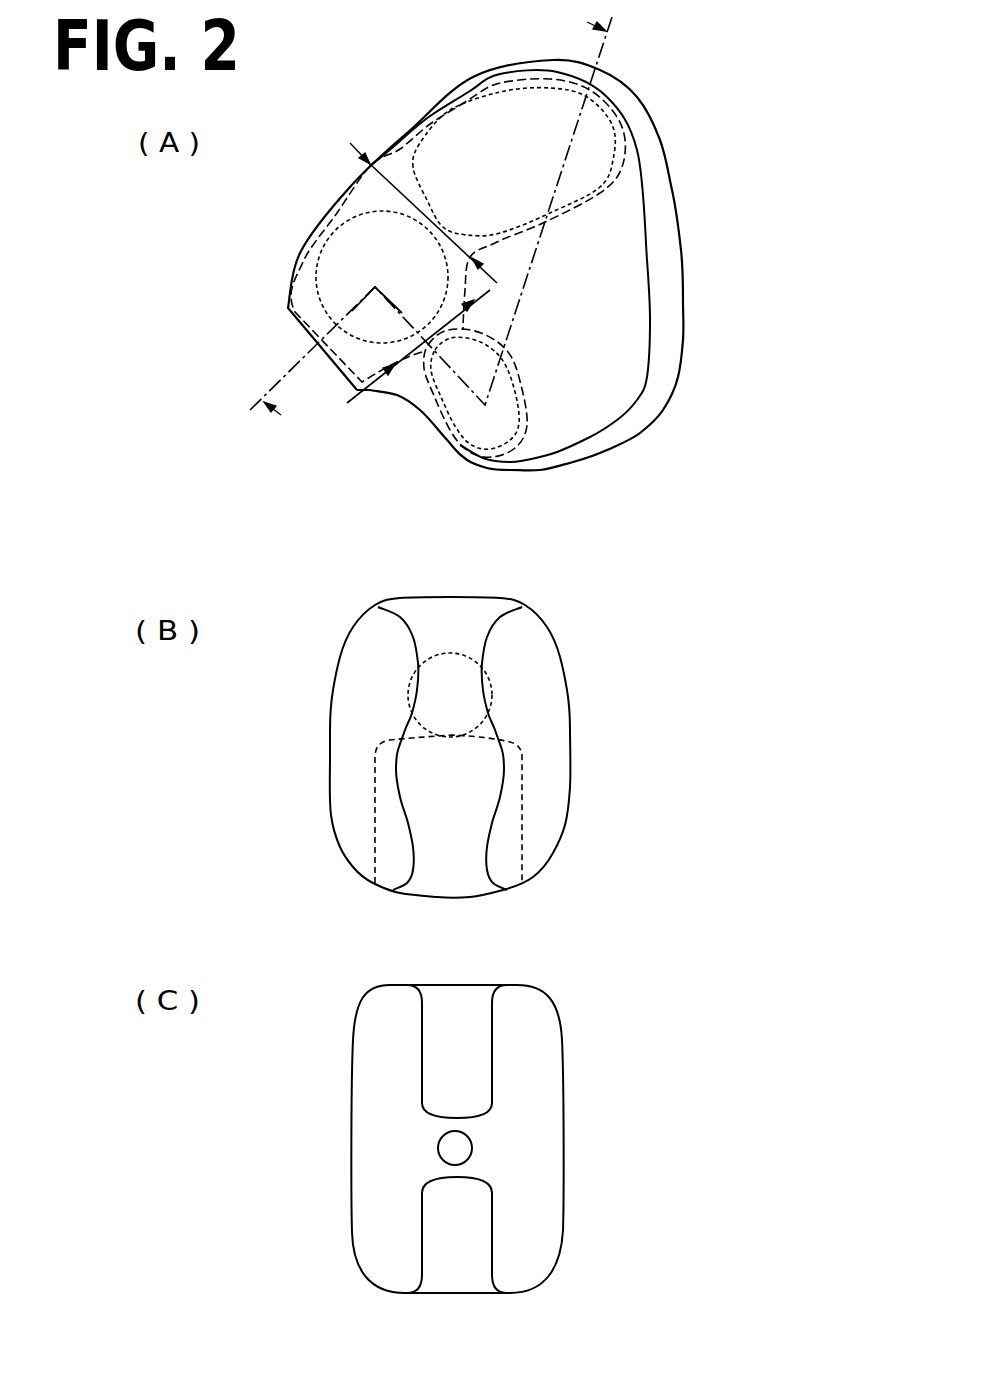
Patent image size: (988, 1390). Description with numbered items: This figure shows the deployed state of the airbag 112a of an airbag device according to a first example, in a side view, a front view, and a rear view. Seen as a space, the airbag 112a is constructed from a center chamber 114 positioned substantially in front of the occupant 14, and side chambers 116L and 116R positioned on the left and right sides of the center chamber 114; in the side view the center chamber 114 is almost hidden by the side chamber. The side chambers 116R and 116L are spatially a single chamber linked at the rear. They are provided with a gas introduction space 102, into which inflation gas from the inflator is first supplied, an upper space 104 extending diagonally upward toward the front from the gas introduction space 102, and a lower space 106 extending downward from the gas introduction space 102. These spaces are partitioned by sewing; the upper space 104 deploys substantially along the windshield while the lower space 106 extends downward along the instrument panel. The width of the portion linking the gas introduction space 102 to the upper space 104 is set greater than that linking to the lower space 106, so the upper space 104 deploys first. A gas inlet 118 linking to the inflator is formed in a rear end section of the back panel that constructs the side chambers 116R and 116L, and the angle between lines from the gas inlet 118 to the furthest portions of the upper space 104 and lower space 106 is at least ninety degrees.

The airbag 112a is at (693, 75).
The gas introduction space 102 is at (352, 212).
The upper space 104 is at (424, 146).
The lower space 106 is at (456, 439).
The center chamber 114 is at (665, 231).
The side chamber 116L is at (627, 203).
The side chamber 116R is at (557, 681).
The occupant 14 is at (523, 792).
The gas inlet 118 is at (472, 1148).